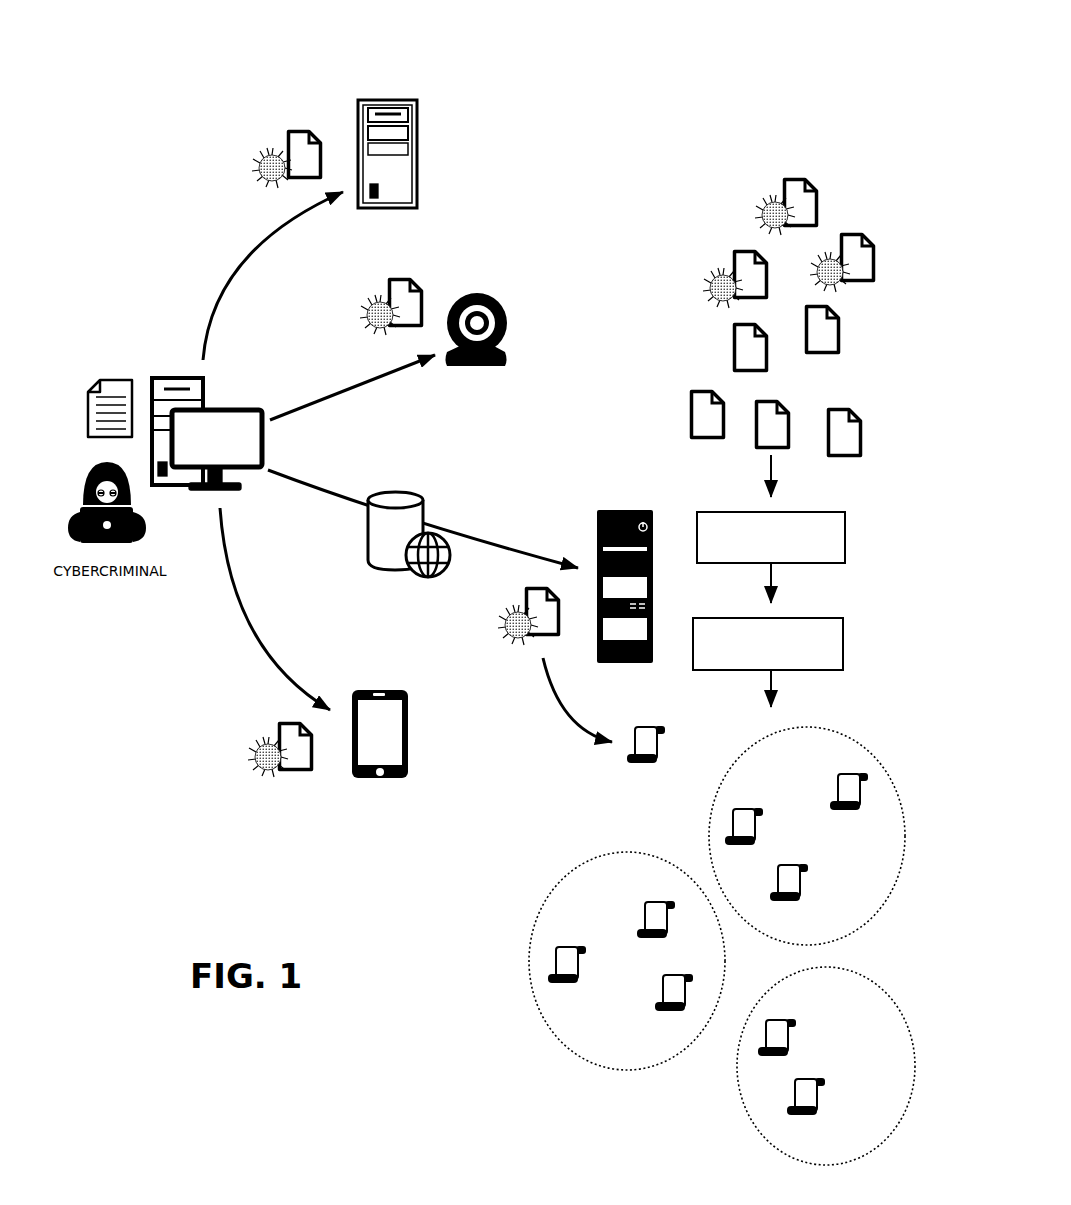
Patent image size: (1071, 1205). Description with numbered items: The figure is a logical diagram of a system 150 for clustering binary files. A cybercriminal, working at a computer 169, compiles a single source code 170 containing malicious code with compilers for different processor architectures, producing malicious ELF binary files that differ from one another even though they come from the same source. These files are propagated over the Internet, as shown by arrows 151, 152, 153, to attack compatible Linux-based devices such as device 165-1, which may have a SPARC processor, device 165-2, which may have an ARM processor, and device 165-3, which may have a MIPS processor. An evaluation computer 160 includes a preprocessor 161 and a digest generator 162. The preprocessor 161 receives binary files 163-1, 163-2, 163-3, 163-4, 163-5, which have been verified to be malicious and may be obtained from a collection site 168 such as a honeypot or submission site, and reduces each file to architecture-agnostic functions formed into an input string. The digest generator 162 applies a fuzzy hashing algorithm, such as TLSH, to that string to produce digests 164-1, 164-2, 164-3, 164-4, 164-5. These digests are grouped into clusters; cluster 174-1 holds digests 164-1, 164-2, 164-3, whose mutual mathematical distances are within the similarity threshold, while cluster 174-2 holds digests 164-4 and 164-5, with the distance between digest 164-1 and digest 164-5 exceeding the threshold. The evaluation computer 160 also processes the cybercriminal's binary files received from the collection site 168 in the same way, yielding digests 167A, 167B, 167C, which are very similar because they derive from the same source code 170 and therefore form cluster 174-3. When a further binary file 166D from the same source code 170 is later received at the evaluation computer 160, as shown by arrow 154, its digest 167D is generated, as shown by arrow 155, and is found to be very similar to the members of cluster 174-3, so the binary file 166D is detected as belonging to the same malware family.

The system for clustering binary files 150 is at (662, 100).
The arrow 151 is at (257, 250).
The arrow 152 is at (343, 373).
The arrow 153 is at (250, 599).
The arrow 154 is at (494, 548).
The arrow 155 is at (565, 712).
The evaluation computer 160 is at (612, 507).
The preprocessor 161 is at (847, 538).
The digest generator 162 is at (845, 642).
The binary file 163-1 is at (781, 402).
The binary file 163-2 is at (862, 437).
The binary file 163-3 is at (690, 410).
The binary file 163-4 is at (733, 347).
The binary file 163-5 is at (841, 335).
The digest 164-1 is at (828, 790).
The digest 164-2 is at (766, 829).
The digest 164-3 is at (808, 885).
The digest 164-4 is at (824, 1099).
The digest 164-5 is at (798, 1040).
The device 165-1 is at (398, 100).
The device 165-2 is at (476, 298).
The device 165-3 is at (408, 752).
The malicious binary file 166D is at (532, 644).
The digest 167A is at (636, 915).
The digest 167B is at (586, 964).
The digest 167C is at (668, 1015).
The digest 167D is at (636, 764).
The collection site 168 is at (399, 491).
The cybercriminal computer 169 is at (161, 376).
The source code 170 is at (108, 381).
The cluster 174-1 is at (850, 731).
The cluster 174-2 is at (910, 1032).
The cluster 174-3 is at (570, 872).